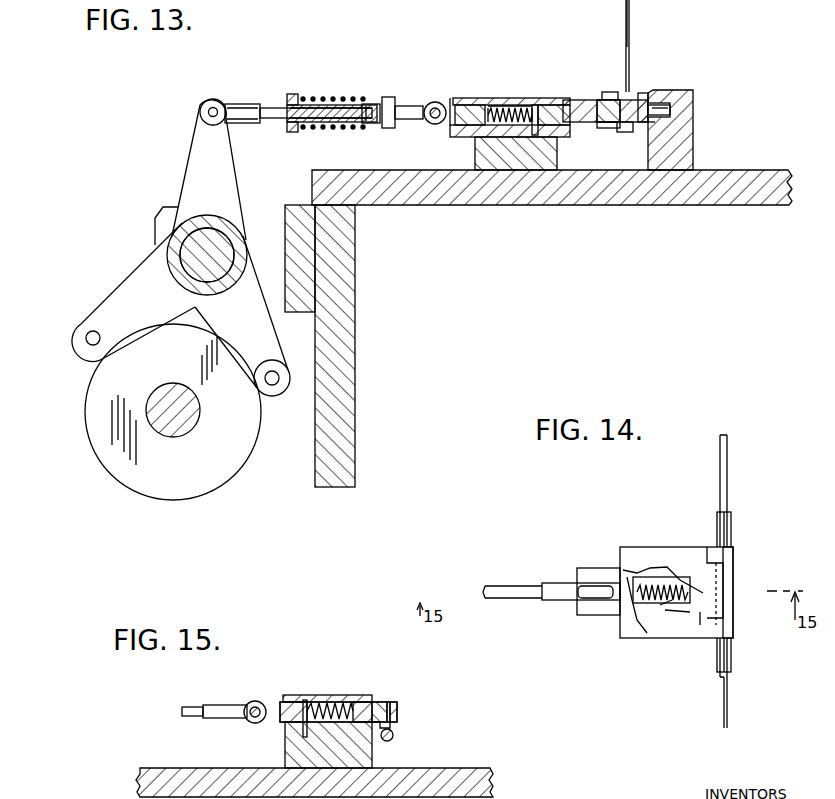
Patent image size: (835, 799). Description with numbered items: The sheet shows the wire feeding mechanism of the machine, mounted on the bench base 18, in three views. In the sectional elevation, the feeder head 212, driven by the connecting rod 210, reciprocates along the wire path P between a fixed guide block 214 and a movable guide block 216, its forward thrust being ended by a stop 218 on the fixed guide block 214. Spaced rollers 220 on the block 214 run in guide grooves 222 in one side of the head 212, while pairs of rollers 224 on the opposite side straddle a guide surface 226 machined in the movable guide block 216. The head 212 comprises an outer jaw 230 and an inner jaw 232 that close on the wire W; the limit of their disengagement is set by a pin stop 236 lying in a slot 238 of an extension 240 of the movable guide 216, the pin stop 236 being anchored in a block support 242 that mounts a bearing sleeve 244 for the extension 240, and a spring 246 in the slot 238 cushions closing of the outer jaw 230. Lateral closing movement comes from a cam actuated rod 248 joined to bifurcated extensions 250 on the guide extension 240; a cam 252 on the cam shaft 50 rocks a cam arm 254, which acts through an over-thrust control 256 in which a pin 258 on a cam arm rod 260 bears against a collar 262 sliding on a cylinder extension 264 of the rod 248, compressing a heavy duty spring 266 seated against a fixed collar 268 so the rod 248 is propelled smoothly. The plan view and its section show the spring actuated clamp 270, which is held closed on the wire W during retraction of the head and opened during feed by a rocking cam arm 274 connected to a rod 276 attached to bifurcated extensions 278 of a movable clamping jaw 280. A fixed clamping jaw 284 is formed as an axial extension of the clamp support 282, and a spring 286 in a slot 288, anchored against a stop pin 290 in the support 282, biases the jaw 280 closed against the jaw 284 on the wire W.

In FIG. 13, the base frame 18 is at (768, 178).
In FIG. 15, the base frame 18 is at (478, 770).
In FIG. 13, the auxiliary cam shaft 50 is at (168, 390).
In FIG. 14, the connecting rod 210 is at (731, 520).
In FIG. 15, the connecting rod 210 is at (394, 737).
In FIG. 13, the feeder head 212 is at (625, 92).
In FIG. 13, the fixed guide block 214 is at (683, 135).
In FIG. 13, the movable guide block 216 is at (583, 115).
In FIG. 13, the stop 218 is at (612, 20).
In FIG. 13, the rollers 220 is at (660, 108).
In FIG. 13, the guide grooves 222 is at (650, 128).
In FIG. 13, the pairs of rollers 224 is at (598, 95).
In FIG. 13, the guide surface 226 is at (588, 100).
In FIG. 13, the outer jaw 230 is at (612, 95).
In FIG. 13, the inner jaw 232 is at (641, 95).
In FIG. 13, the pin stop 236 is at (536, 103).
In FIG. 13, the slot 238 is at (492, 103).
In FIG. 13, the extension 240 is at (552, 103).
In FIG. 13, the block support 242 is at (483, 154).
In FIG. 13, the bearing sleeve 244 is at (485, 98).
In FIG. 13, the spring 246 is at (510, 106).
In FIG. 13, the cam actuated rod 248 is at (405, 106).
In FIG. 13, the bifurcated extensions 250 is at (440, 100).
In FIG. 13, the cam 252 is at (88, 415).
In FIG. 13, the cam arm 254 is at (222, 182).
In FIG. 13, the over-thrust control 256 is at (334, 80).
In FIG. 13, the pin 258 is at (291, 94).
In FIG. 13, the cam arm rod 260 is at (268, 108).
In FIG. 13, the collar 262 is at (298, 131).
In FIG. 13, the cylinder extension 264 is at (368, 104).
In FIG. 13, the heavy duty spring 266 is at (350, 127).
In FIG. 13, the fixed collar 268 is at (391, 128).
In FIG. 14, the spring actuated clamp 270 is at (657, 524).
In FIG. 15, the spring actuated clamp 270 is at (333, 643).
In FIG. 13, the rocking cam arm 274 is at (178, 148).
In FIG. 14, the rod 276 is at (494, 583).
In FIG. 15, the rod 276 is at (185, 711).
In FIG. 14, the bifurcated extensions 278 is at (590, 612).
In FIG. 15, the bifurcated extensions 278 is at (272, 705).
In FIG. 14, the movable clamping jaw 280 is at (718, 612).
In FIG. 15, the movable clamping jaw 280 is at (378, 702).
In FIG. 15, the clamp support 282 is at (292, 755).
In FIG. 14, the fixed clamping jaw 284 is at (733, 582).
In FIG. 15, the fixed clamping jaw 284 is at (395, 706).
In FIG. 14, the spring 286 is at (660, 585).
In FIG. 15, the spring 286 is at (338, 695).
In FIG. 14, the slot 288 is at (665, 605).
In FIG. 14, the stop pin 290 is at (630, 578).
In FIG. 15, the stop pin 290 is at (303, 700).
In FIG. 13, the wire path P is at (617, 35).
In FIG. 14, the wire path P is at (737, 479).
In FIG. 13, the wire W is at (630, 41).
In FIG. 14, the wire W is at (728, 456).
In FIG. 15, the wire W is at (395, 712).